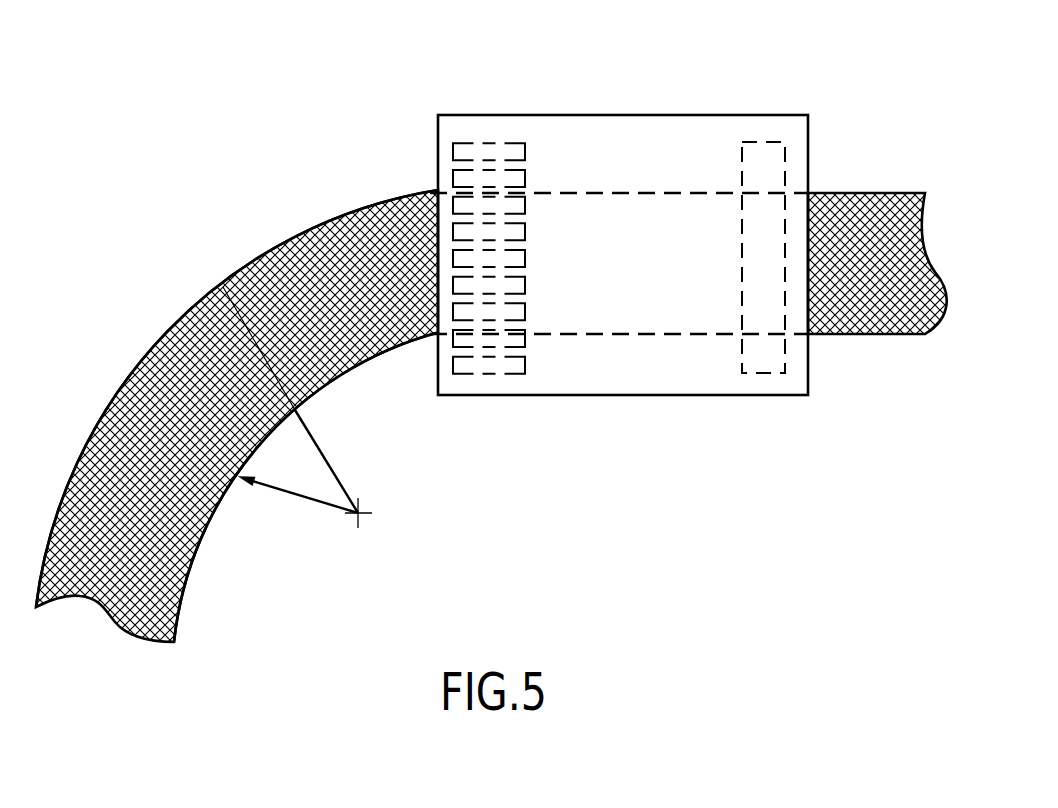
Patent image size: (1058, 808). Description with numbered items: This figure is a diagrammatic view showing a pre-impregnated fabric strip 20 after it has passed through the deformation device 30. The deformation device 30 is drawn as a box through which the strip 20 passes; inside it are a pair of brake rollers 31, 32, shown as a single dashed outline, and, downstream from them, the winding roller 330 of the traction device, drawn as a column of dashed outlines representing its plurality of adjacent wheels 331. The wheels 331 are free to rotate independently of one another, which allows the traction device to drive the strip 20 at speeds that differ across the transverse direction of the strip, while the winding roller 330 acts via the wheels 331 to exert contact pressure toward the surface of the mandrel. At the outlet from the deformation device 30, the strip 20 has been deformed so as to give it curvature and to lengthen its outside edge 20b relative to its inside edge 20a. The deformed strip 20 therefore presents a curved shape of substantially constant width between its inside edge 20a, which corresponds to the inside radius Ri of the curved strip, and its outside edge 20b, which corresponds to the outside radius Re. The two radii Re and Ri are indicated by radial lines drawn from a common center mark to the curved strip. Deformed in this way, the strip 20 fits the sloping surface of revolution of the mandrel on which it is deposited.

The pre-impregnated fabric strip 20 is at (109, 404).
The inside edge 20a is at (200, 548).
The outside edge 20b is at (194, 305).
The deformation device 30 is at (638, 103).
The winding roller 330 is at (520, 221).
The wheels 331 is at (525, 210).
The brake roller 31 is at (750, 213).
The brake roller 32 is at (753, 138).
The outside radius Re is at (320, 442).
The inside radius Ri is at (300, 497).